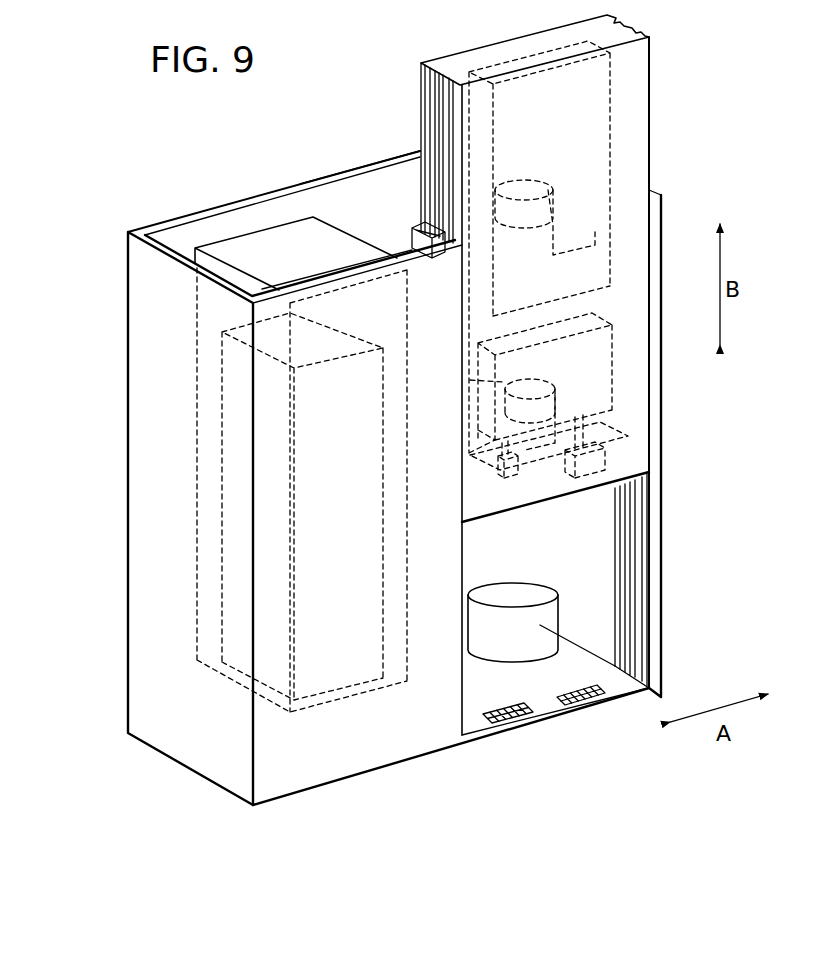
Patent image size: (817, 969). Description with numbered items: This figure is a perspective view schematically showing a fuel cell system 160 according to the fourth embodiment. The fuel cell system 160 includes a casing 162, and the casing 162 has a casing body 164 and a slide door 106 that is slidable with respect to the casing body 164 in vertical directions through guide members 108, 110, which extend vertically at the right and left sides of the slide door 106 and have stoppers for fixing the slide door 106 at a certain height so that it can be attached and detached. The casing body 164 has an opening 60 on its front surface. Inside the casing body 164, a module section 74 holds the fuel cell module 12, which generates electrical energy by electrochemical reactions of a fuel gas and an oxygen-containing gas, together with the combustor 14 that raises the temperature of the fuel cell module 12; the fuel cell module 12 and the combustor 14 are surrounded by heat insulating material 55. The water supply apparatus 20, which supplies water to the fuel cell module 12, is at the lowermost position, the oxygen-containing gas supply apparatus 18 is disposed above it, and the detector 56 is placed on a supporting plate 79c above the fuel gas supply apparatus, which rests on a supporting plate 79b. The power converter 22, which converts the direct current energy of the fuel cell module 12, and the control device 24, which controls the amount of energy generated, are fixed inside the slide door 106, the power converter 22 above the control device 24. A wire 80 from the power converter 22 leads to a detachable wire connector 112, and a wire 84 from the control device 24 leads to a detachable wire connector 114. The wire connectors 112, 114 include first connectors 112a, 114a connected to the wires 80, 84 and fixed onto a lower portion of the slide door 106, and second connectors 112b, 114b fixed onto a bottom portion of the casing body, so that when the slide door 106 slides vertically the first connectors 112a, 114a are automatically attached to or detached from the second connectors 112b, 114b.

The fuel cell system 160 is at (192, 171).
The casing 162 is at (117, 317).
The casing body 164 is at (367, 168).
The module section 74 is at (263, 222).
The heat insulating material 55 is at (342, 247).
The guide member 110 is at (412, 240).
The slide door 106 is at (652, 104).
The power converter 22 is at (597, 133).
The detector 56 is at (517, 186).
The supporting plate 79c is at (578, 232).
The control device 24 is at (596, 375).
The oxygen-containing gas supply apparatus 18 is at (505, 413).
The wire 80 is at (470, 380).
The supporting plate 79b is at (478, 452).
The wire 84 is at (613, 430).
The first connector 114a is at (583, 462).
The first connector 112a is at (490, 493).
The guide member 108 is at (642, 627).
The opening 60 is at (523, 675).
The water supply apparatus 20 is at (480, 638).
The wire connector 112 is at (480, 725).
The second connector 112b is at (517, 720).
The wire connector 114 is at (607, 700).
The second connector 114b is at (588, 700).
The fuel cell module 12 is at (230, 447).
The combustor 14 is at (337, 670).